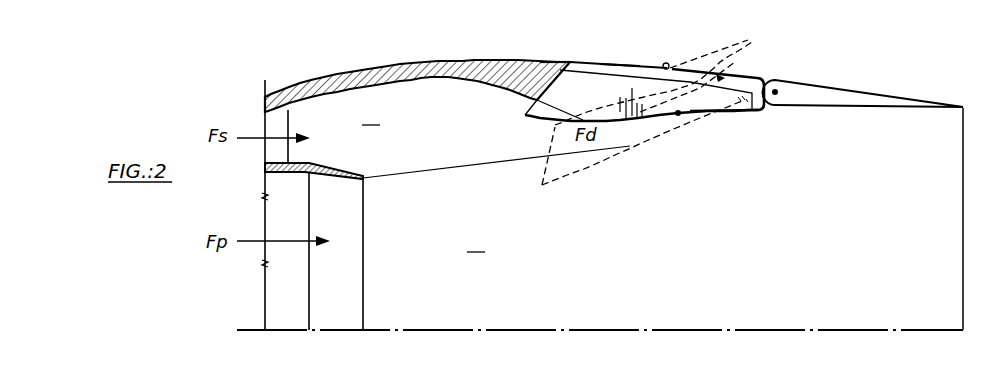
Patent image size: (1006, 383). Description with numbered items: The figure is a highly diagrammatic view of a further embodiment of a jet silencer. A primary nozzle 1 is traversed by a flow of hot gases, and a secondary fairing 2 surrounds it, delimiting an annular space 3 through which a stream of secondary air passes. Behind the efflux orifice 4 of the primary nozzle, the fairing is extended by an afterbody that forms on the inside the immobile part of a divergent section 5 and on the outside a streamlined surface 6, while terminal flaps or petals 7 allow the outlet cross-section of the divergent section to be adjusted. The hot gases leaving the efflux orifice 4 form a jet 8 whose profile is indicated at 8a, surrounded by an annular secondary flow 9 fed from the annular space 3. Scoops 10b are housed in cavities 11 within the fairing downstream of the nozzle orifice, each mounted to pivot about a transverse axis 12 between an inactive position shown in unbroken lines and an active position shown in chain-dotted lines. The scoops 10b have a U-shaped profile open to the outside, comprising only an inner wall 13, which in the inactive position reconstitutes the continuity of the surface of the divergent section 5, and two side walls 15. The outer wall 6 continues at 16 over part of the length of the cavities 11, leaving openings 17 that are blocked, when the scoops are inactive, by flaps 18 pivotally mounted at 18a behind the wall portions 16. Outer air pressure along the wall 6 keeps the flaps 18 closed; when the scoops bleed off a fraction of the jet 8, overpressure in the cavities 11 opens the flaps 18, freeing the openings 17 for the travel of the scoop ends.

The primary nozzle 1 is at (280, 176).
The secondary fairing 2 is at (318, 68).
The annular space 3 is at (278, 99).
The efflux orifice 4 is at (363, 266).
The divergent section 5 is at (731, 116).
The streamlined surface 6 is at (527, 61).
The terminal flaps 7 is at (853, 109).
The jet 8 is at (476, 241).
The jet profile 8a is at (399, 168).
The annular secondary flow 9 is at (371, 114).
The scoops 10b is at (538, 104).
The cavities 11 is at (582, 66).
The transverse axis 12 is at (678, 118).
The inner wall 13 is at (548, 125).
The side walls 15 is at (640, 112).
The wall portion 16 is at (611, 63).
The openings 17 is at (768, 72).
The flaps 18 is at (750, 72).
The flap pivot 18a is at (663, 64).